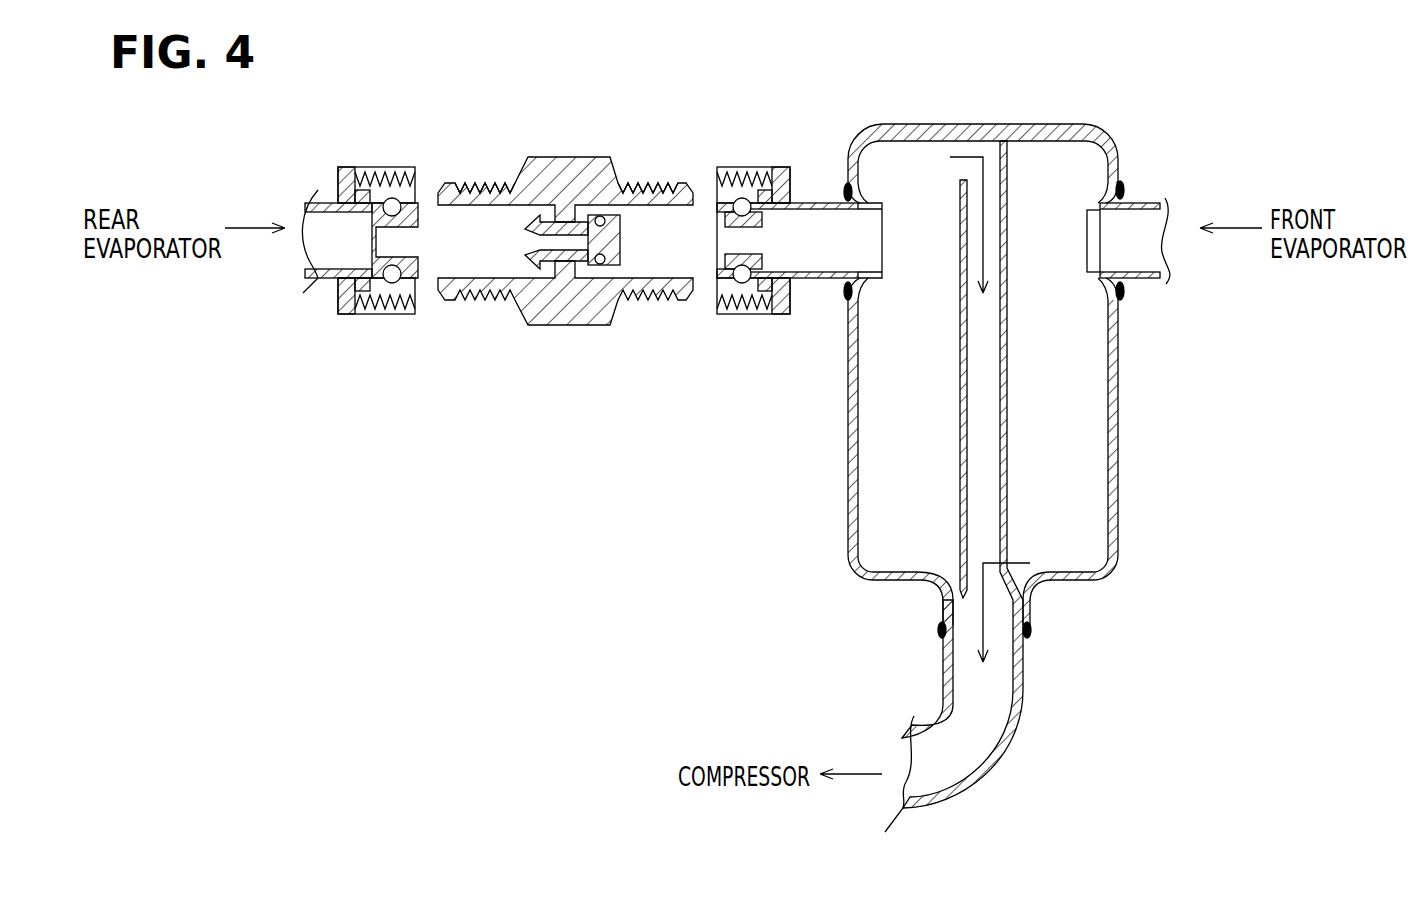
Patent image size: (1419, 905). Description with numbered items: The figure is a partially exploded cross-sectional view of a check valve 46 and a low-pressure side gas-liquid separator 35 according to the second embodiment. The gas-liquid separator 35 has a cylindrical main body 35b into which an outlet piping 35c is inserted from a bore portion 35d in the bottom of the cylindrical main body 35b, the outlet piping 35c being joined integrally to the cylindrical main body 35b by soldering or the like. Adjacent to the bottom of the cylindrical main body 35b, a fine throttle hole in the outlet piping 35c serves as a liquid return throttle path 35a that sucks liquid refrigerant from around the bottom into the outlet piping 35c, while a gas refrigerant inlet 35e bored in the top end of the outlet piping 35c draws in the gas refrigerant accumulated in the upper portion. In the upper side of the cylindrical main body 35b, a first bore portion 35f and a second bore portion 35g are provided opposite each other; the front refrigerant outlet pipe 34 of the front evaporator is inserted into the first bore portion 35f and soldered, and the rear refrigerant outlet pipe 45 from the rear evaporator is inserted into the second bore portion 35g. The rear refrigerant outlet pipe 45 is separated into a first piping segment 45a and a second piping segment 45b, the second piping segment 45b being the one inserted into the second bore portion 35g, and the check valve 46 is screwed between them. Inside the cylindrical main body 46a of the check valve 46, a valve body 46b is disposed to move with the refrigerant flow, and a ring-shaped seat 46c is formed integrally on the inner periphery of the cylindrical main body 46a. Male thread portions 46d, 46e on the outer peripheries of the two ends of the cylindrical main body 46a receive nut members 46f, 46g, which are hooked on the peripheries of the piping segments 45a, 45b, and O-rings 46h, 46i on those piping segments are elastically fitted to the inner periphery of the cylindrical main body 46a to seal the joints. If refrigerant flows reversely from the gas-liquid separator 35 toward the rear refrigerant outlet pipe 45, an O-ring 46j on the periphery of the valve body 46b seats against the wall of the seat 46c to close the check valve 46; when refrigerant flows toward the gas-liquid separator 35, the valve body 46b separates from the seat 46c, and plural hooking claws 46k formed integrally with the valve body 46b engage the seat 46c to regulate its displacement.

The front refrigerant outlet pipe 34 is at (1152, 202).
The gas-liquid separator 35 is at (1088, 97).
The liquid return throttle path 35a is at (1007, 560).
The cylindrical main body 35b is at (1113, 370).
The outlet piping 35c is at (1010, 392).
The bore portion 35d is at (940, 610).
The gas refrigerant inlet 35e is at (961, 180).
The first bore portion 35f is at (1112, 200).
The second bore portion 35g is at (850, 196).
The rear refrigerant outlet pipe 45 is at (740, 482).
The first piping segment 45a is at (318, 278).
The second piping segment 45b is at (815, 278).
The check valve 46 is at (574, 345).
The cylindrical main body 46a is at (588, 322).
The valve body 46b is at (630, 246).
The ring-shaped seat 46c is at (556, 170).
The male thread portion 46d is at (478, 186).
The male thread portion 46e is at (667, 172).
The nut member 46f is at (344, 172).
The nut member 46g is at (782, 170).
The O-ring 46h is at (392, 283).
The O-ring 46i is at (745, 283).
The O-ring 46j is at (626, 172).
The hooking claws 46k is at (509, 186).